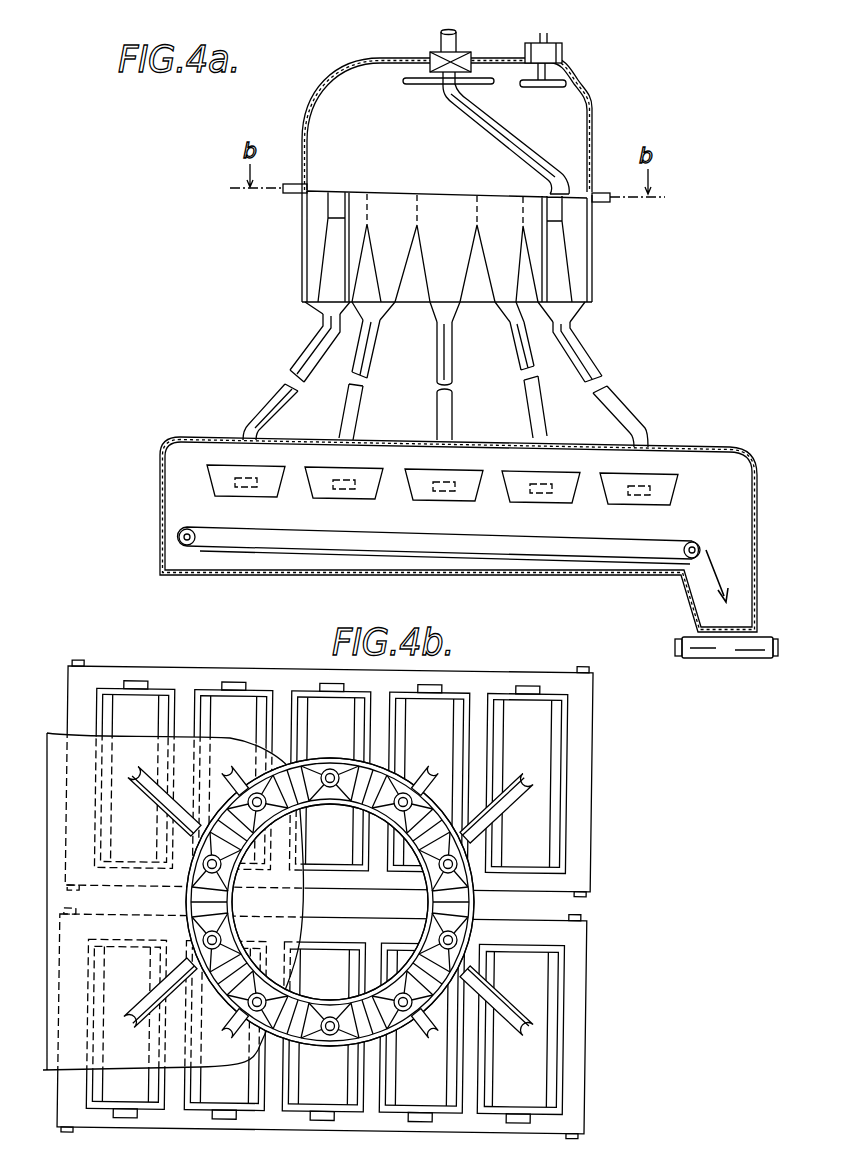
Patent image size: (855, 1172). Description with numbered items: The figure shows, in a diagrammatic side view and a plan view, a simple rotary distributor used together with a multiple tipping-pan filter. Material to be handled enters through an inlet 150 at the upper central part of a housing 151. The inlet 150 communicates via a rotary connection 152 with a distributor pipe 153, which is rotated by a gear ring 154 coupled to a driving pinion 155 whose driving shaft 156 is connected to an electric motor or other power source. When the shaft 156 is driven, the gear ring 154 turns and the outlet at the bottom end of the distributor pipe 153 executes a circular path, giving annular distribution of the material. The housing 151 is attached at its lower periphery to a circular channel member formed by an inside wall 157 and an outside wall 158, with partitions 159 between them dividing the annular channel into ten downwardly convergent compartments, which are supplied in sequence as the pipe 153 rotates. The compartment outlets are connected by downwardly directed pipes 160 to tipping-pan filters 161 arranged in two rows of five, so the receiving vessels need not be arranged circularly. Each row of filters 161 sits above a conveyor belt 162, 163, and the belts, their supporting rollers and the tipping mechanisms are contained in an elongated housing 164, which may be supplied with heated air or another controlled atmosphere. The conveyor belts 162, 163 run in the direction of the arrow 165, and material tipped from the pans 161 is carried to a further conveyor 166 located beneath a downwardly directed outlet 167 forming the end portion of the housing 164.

In FIG. 4a, the inlet 150 is at (438, 44).
In FIG. 4a, the housing 151 is at (323, 92).
In FIG. 4a, the rotary connection 152 is at (473, 66).
In FIG. 4a, the distributor pipe 153 is at (555, 150).
In FIG. 4a, the gear ring 154 is at (432, 86).
In FIG. 4a, the driving pinion 155 is at (556, 88).
In FIG. 4a, the driving shaft 156 is at (562, 52).
In FIG. 4a, the inside wall 157 is at (470, 222).
In FIG. 4b, the inside wall 157 is at (286, 830).
In FIG. 4a, the outside wall 158 is at (596, 200).
In FIG. 4b, the outside wall 158 is at (330, 875).
In FIG. 4b, the partitions 159 is at (386, 770).
In FIG. 4a, the downwardly directed pipes 160 is at (437, 422).
In FIG. 4b, the downwardly directed pipes 160 is at (155, 813).
In FIG. 4a, the tipping-pan filters 161 is at (442, 499).
In FIG. 4b, the tipping-pan filters 161 is at (216, 712).
In FIG. 4a, the conveyor belt 162 is at (518, 556).
In FIG. 4b, the conveyor belt 162 is at (578, 971).
In FIG. 4a, the conveyor belt 163 is at (439, 570).
In FIG. 4b, the conveyor belt 163 is at (580, 781).
In FIG. 4a, the elongated housing 164 is at (740, 450).
In FIG. 4b, the elongated housing 164 is at (145, 981).
In FIG. 4a, the arrow 165 is at (451, 526).
In FIG. 4a, the further conveyor 166 is at (720, 660).
In FIG. 4a, the downwardly directed outlet 167 is at (733, 587).